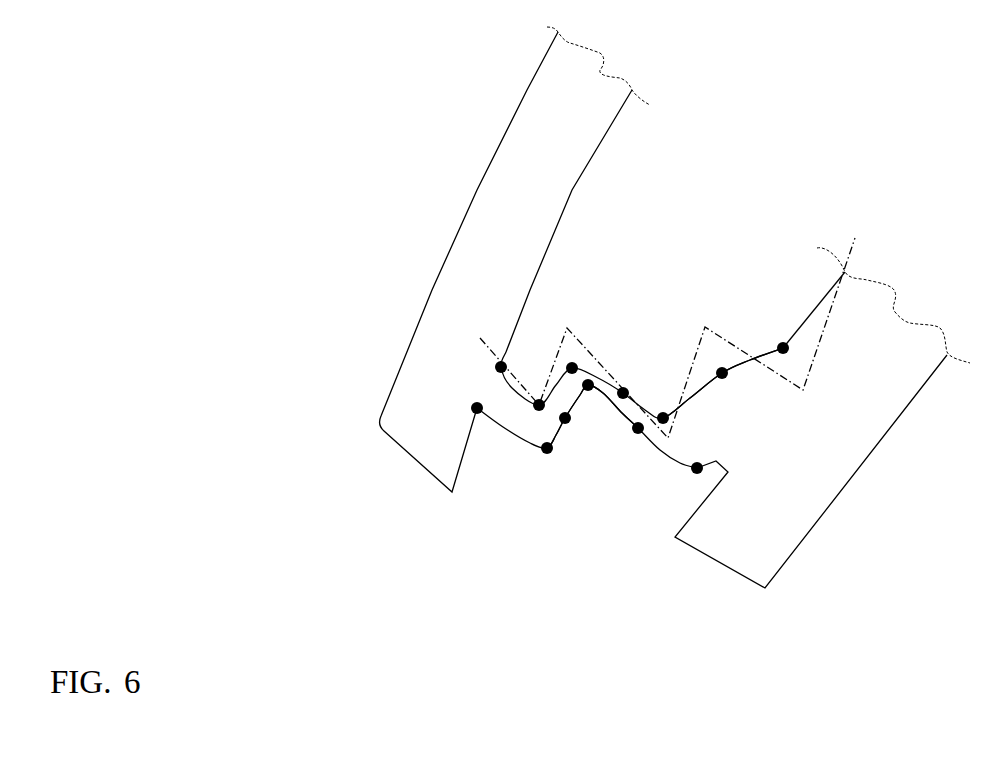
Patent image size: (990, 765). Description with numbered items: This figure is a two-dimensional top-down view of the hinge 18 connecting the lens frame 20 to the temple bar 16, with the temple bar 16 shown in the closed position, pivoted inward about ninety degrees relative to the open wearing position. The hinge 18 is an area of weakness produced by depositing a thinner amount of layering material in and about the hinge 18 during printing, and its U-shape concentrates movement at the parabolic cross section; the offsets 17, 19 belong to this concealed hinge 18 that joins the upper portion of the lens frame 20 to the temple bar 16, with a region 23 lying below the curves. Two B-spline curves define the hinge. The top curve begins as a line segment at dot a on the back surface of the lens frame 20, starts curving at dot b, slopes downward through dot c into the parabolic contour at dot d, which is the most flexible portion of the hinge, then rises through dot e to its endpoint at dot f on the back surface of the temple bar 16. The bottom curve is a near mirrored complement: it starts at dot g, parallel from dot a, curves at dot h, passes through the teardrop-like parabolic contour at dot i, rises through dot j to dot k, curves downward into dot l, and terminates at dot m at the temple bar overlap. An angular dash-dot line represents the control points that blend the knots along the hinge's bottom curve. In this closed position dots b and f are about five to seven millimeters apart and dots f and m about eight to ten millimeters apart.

The temple bar 16 is at (822, 418).
The offset 17 is at (723, 387).
The hinge 18 is at (667, 338).
The offset 19 is at (630, 408).
The lens frame 20 is at (515, 259).
The lower region 23 is at (592, 463).
The dot a is at (475, 400).
The dot b is at (553, 454).
The dot c is at (569, 426).
The dot d is at (588, 397).
The dot e is at (632, 437).
The dot f is at (693, 477).
The dot g is at (505, 361).
The dot h is at (538, 392).
The dot i is at (575, 364).
The dot j is at (626, 387).
The dot k is at (663, 407).
The dot l is at (719, 364).
The dot m is at (781, 340).